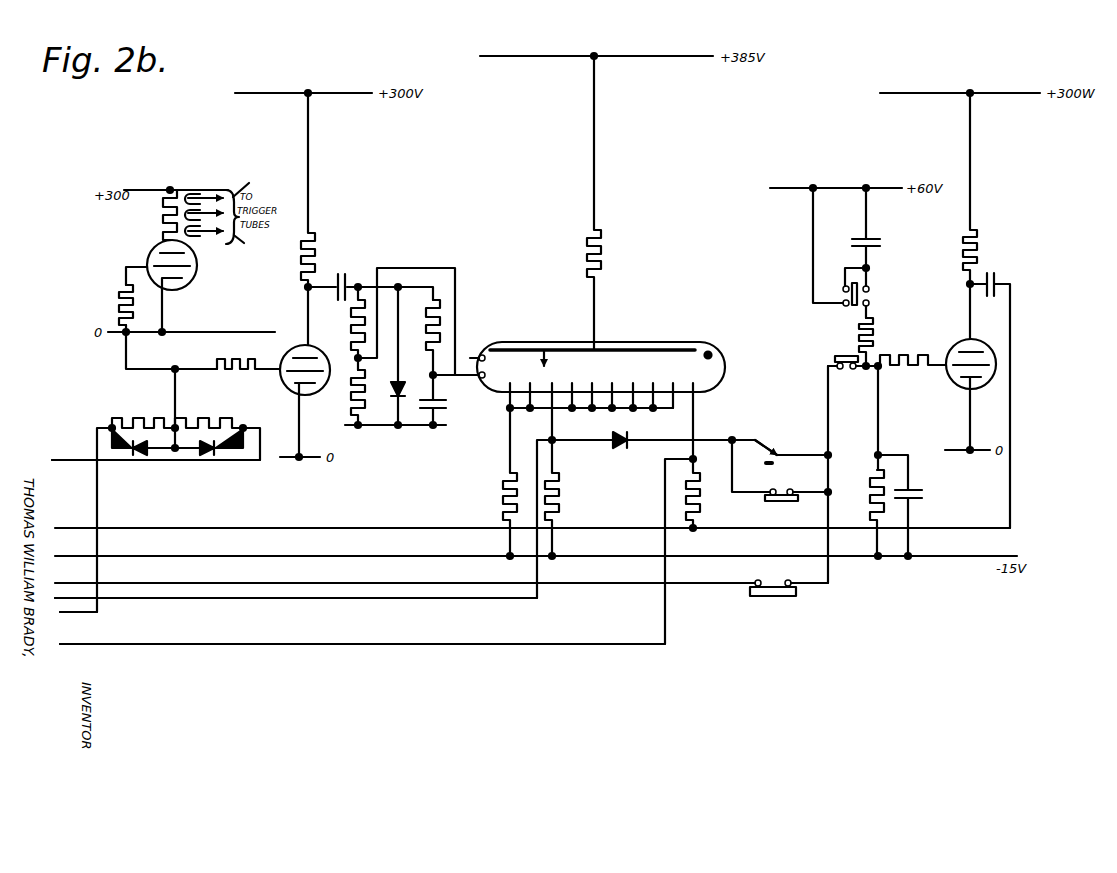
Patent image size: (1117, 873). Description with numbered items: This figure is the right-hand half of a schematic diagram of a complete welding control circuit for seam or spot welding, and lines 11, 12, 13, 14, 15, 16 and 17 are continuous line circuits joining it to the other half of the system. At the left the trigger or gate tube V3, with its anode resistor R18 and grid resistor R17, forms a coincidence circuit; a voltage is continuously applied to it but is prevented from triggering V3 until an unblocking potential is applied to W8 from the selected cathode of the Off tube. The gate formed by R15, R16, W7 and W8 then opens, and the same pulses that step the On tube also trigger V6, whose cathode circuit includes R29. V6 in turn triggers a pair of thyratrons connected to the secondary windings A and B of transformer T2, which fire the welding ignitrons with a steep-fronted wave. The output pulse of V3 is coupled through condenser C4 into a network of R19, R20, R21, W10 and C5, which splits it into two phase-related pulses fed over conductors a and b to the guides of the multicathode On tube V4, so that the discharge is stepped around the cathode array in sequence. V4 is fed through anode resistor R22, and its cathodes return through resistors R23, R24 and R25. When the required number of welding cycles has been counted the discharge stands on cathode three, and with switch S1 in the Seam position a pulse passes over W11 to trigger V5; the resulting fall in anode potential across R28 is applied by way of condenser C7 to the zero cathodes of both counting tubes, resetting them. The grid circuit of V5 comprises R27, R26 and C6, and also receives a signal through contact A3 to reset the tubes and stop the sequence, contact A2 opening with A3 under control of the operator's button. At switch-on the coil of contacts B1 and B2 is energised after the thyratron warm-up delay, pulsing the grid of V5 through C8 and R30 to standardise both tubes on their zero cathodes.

The transformer T2 is at (190, 217).
The secondary winding A is at (247, 181).
The secondary winding B is at (244, 247).
The trigger tube V6 is at (149, 255).
The resistor R29 is at (103, 305).
The resistor R17 is at (258, 357).
The trigger or gate tube V3 is at (300, 347).
The gating resistor R15 is at (150, 412).
The gating resistor R16 is at (214, 412).
The gating rectifier W7 is at (156, 444).
The gating rectifier W8 is at (202, 444).
The anode resistor R18 is at (315, 269).
The coupling condenser C4 is at (351, 279).
The resistor R19 is at (340, 328).
The resistor R20 is at (337, 397).
The resistor R21 is at (442, 319).
The rectifier W10 is at (424, 377).
The condenser C5 is at (447, 401).
The anode resistor R22 is at (604, 254).
The On tube V4 is at (570, 340).
The rectifier W11 is at (624, 439).
The switch S1 is at (780, 452).
The contact A2 is at (799, 500).
The contact A3 is at (797, 595).
The cathode resistor R23 is at (502, 497).
The cathode resistor R24 is at (560, 505).
The cathode resistor R25 is at (686, 496).
The line 11 is at (146, 460).
The line 12 is at (521, 527).
The line 13 is at (525, 555).
The line 14 is at (430, 582).
The line 15 is at (285, 598).
The line 16 is at (65, 612).
The line 17 is at (350, 644).
The condenser C8 is at (882, 243).
The contact B2 is at (870, 297).
The resistor R30 is at (876, 331).
The contact B1 is at (848, 356).
The grid resistor R27 is at (905, 350).
The reset tube V5 is at (964, 340).
The anode resistor R28 is at (978, 256).
The condenser C7 is at (993, 280).
The grid resistor R26 is at (886, 490).
The condenser C6 is at (923, 499).